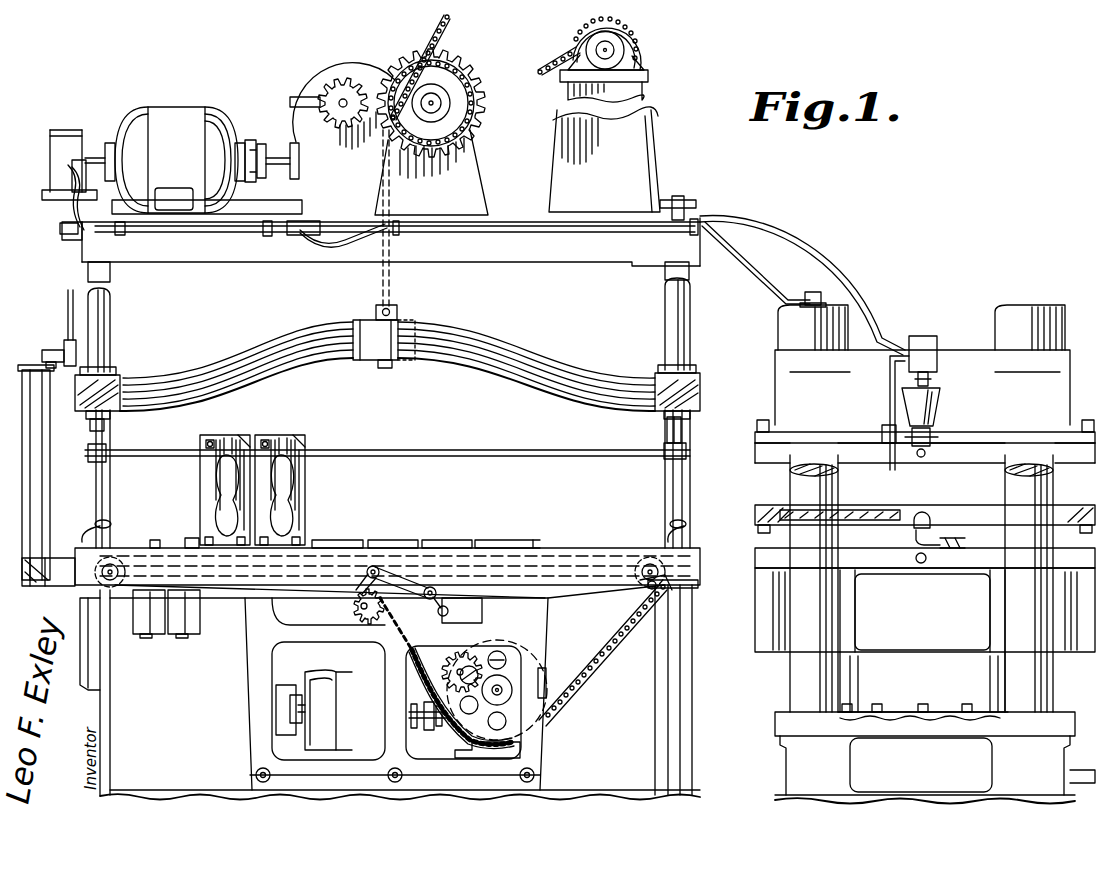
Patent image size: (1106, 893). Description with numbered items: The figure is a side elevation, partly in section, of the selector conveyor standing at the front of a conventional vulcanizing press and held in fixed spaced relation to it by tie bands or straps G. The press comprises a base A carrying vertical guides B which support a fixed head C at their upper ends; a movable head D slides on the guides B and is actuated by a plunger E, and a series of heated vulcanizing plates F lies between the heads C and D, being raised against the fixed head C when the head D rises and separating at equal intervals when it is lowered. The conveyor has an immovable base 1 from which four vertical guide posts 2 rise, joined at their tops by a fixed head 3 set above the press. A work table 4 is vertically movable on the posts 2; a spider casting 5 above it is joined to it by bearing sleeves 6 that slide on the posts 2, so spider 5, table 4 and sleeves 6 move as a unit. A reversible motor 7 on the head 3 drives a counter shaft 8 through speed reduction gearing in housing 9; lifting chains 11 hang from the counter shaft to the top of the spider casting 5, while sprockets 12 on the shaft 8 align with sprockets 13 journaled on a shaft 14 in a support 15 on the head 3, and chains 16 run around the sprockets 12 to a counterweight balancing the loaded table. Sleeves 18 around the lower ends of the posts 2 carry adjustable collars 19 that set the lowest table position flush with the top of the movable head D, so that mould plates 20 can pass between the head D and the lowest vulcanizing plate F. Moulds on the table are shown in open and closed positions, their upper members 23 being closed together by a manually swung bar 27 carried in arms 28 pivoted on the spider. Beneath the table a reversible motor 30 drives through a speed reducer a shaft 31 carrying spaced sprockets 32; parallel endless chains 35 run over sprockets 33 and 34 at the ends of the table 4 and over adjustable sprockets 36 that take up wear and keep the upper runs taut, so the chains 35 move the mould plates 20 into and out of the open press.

The base 1 is at (172, 790).
The vertical guide posts 2 is at (110, 331).
The fixed head 3 is at (200, 250).
The work table 4 is at (560, 582).
The spider casting 5 is at (446, 360).
The bearing sleeves 6 is at (118, 540).
The motor 7 is at (178, 118).
The counter shaft 8 is at (283, 150).
The housing 9 is at (322, 68).
The lifting chains 11 is at (396, 278).
The sprockets 12 is at (470, 110).
The sprockets 13 is at (640, 50).
The shaft 14 is at (615, 62).
The support 15 is at (636, 148).
The chains 16 is at (426, 27).
The sleeves 18 is at (106, 664).
The adjustable collars 19 is at (76, 590).
The mould plates 20 is at (538, 546).
The upper mould member 23 is at (200, 440).
The swingable bar 27 is at (505, 452).
The arms 28 is at (670, 434).
The reversible motor 30 is at (348, 690).
The shaft 31 is at (500, 688).
The sprockets 32 is at (456, 668).
The sprocket 33 is at (85, 600).
The sprocket 34 is at (641, 590).
The endless chains 35 is at (602, 655).
The adjustable sprockets 36 is at (348, 602).
The base A is at (790, 775).
The vertical guides B is at (800, 680).
The fixed head C is at (1048, 402).
The movable head D is at (760, 620).
The plunger E is at (860, 680).
The vulcanizing plates F is at (976, 510).
The tie bands G is at (748, 268).